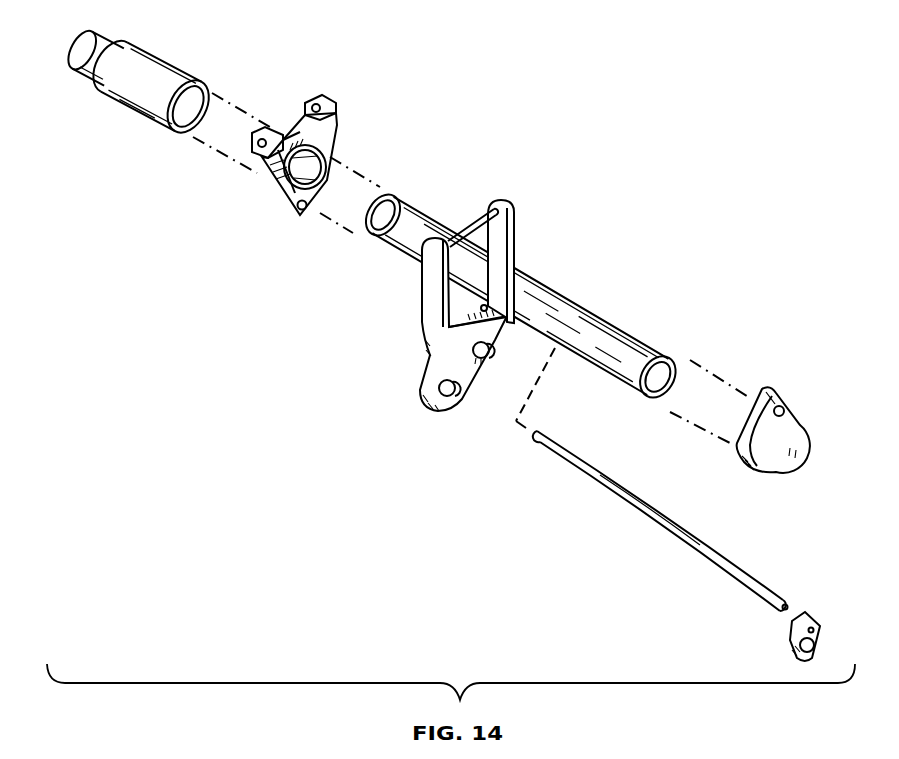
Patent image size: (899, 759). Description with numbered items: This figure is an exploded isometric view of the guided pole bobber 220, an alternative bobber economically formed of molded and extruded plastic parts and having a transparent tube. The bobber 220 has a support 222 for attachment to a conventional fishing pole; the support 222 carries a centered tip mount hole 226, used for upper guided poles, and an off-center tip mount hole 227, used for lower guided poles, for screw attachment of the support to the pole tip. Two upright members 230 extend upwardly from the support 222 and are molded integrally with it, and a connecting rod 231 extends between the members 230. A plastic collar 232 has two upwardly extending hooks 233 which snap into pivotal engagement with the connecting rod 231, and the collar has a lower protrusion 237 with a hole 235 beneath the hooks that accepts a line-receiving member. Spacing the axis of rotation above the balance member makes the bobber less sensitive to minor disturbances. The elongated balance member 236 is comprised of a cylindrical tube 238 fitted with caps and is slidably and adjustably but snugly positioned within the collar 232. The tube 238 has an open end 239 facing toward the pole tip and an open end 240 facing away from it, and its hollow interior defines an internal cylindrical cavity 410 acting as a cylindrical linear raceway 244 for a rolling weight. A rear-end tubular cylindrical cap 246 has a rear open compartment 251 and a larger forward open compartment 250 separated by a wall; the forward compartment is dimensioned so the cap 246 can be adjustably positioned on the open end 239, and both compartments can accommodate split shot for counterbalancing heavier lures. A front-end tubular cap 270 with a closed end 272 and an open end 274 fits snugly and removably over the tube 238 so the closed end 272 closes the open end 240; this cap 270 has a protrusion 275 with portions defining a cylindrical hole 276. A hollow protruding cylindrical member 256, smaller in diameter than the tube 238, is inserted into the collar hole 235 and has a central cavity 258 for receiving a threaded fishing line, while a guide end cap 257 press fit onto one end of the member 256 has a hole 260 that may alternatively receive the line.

The guided pole bobber 220 is at (517, 116).
The support 222 is at (422, 331).
The centered tip mount hole 226 is at (489, 360).
The off-center tip mount hole 227 is at (460, 400).
The upright members 230 is at (514, 233).
The connecting rod 231 is at (468, 226).
The plastic collar 232 is at (332, 148).
The upwardly extending hooks 233 is at (321, 95).
The hole 235 is at (291, 198).
The elongated balance member 236 is at (563, 291).
The lower protrusion 237 is at (266, 178).
The cylindrical tube 238 is at (538, 278).
The open end 239 is at (396, 203).
The open end 240 is at (680, 384).
The cylindrical linear raceway 244 is at (363, 234).
The rear-end tubular cylindrical cap 246 is at (157, 53).
The forward open compartment 250 is at (209, 92).
The rear open compartment 251 is at (75, 46).
The hollow protruding cylindrical member 256 is at (666, 520).
The guide end cap 257 is at (810, 620).
The central cavity 258 is at (533, 435).
The hole 260 is at (813, 643).
The front-end tubular cap 270 is at (796, 429).
The closed end 272 is at (797, 458).
The open end 274 is at (737, 443).
The protrusion 275 is at (786, 414).
The cylindrical hole 276 is at (783, 406).
The internal cylindrical cavity 410 is at (372, 212).